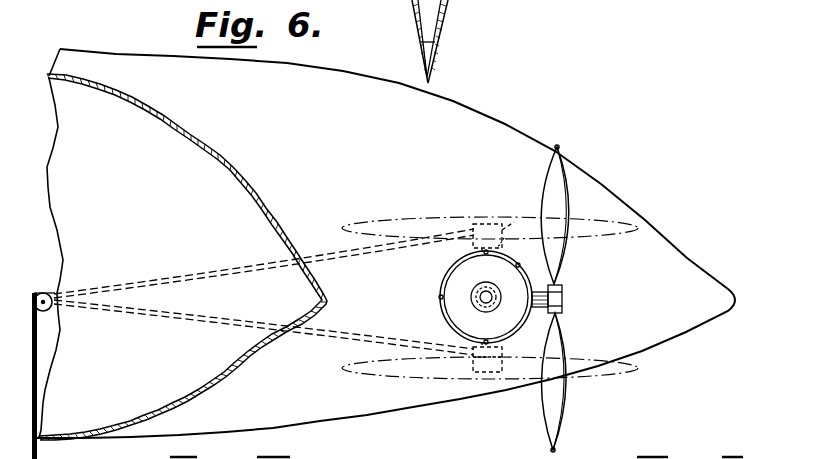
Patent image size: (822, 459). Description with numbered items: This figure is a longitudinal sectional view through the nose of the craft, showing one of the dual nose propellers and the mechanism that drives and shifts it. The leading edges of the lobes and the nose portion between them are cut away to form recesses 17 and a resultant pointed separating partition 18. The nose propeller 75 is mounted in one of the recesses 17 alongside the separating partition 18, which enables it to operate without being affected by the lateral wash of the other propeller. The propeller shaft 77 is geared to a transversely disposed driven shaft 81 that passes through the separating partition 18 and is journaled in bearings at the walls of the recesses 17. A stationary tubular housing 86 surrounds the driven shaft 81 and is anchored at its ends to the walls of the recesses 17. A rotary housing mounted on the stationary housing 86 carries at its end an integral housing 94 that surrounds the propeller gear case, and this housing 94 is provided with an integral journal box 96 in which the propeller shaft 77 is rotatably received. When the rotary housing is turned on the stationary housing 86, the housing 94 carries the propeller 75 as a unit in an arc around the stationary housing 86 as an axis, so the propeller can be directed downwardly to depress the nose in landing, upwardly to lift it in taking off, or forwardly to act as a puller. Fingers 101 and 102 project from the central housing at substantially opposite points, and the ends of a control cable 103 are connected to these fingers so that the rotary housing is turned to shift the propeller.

The recesses 17 is at (182, 256).
The separating partition 18 is at (394, 243).
The nose propeller 75 is at (574, 298).
The propeller shaft 77 is at (508, 238).
The driven shaft 81 is at (491, 313).
The stationary tubular housing 86 is at (504, 281).
The housing 94 is at (471, 297).
The journal box 96 is at (568, 293).
The finger 101 is at (506, 248).
The finger 102 is at (506, 350).
The control cable 103 is at (264, 295).